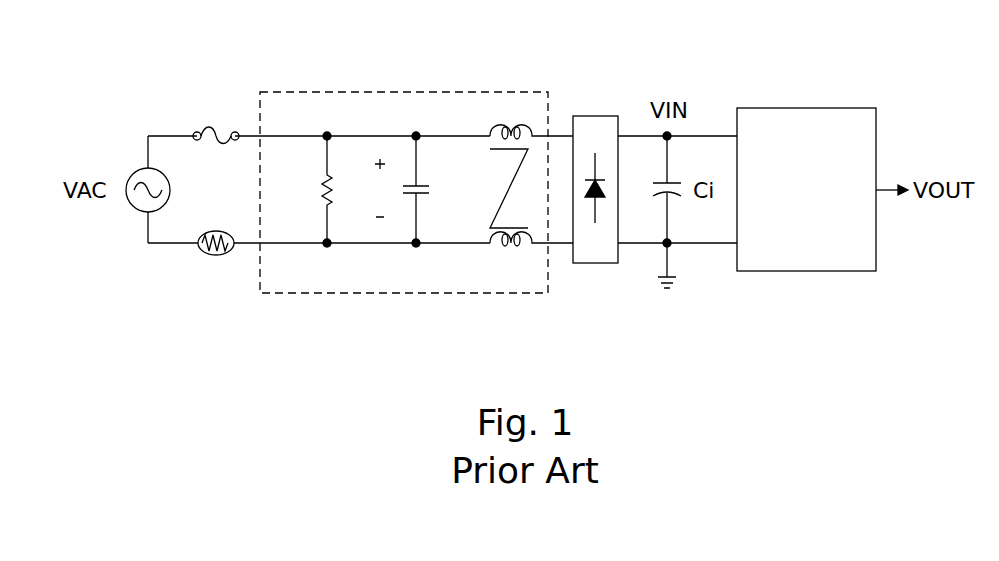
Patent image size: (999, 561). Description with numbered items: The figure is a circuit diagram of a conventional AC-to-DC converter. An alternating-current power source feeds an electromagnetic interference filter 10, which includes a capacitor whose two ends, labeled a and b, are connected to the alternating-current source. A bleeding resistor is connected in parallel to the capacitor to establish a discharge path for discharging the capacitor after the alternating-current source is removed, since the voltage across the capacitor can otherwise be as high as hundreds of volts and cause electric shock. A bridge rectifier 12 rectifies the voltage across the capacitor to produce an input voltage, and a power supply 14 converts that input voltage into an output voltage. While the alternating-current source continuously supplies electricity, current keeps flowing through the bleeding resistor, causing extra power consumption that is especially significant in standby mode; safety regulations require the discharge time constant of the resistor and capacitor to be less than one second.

The electromagnetic interference (EMI) filter 10 is at (405, 92).
The bridge rectifier 12 is at (593, 116).
The power supply 14 is at (803, 108).